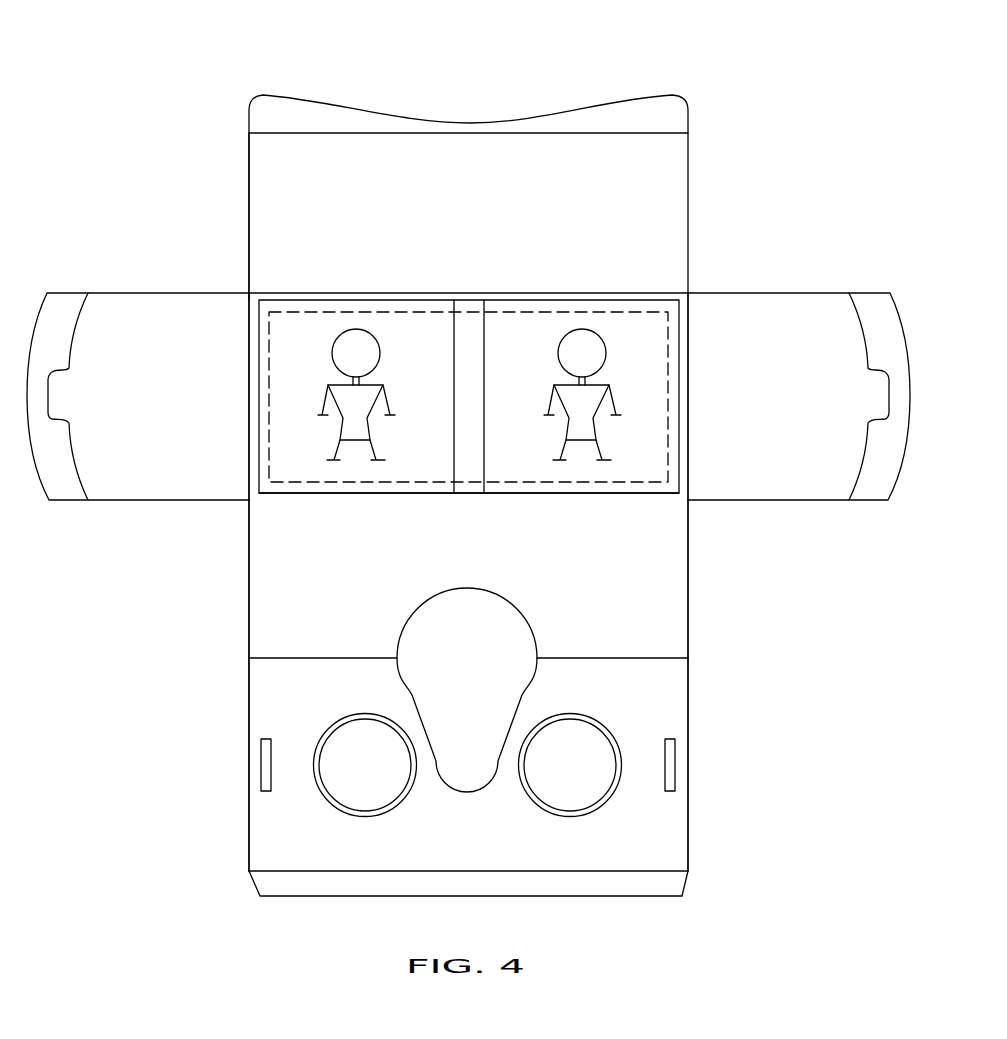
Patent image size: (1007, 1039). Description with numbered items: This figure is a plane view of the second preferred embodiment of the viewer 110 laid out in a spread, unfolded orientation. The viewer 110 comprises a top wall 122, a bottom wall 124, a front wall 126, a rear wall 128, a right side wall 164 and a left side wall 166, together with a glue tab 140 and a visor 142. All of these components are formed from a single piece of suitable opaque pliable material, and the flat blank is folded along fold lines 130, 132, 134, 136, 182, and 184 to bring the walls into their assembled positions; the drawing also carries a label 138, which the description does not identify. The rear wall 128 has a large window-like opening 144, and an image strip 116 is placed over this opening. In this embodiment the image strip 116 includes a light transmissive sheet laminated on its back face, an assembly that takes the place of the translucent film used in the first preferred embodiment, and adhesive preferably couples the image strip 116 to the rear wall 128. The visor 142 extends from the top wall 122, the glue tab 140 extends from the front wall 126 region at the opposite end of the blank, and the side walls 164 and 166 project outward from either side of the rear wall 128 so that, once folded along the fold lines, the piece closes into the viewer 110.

The viewer 110 is at (685, 73).
The image strip 116 is at (300, 325).
The top wall 122 is at (662, 173).
The bottom wall 124 is at (668, 622).
The front wall 126 is at (668, 703).
The rear wall 128 is at (463, 493).
The fold line 130 is at (483, 310).
The fold line 132 is at (633, 503).
The fold line 134 is at (272, 660).
The fold line 136 is at (272, 868).
The top fold line 138 is at (292, 133).
The glue tab 140 is at (667, 885).
The visor 142 is at (290, 118).
The window-like opening 144 is at (583, 482).
The right side wall 164 is at (163, 318).
The left side wall 166 is at (820, 328).
The fold line 182 is at (249, 440).
The fold line 184 is at (688, 347).